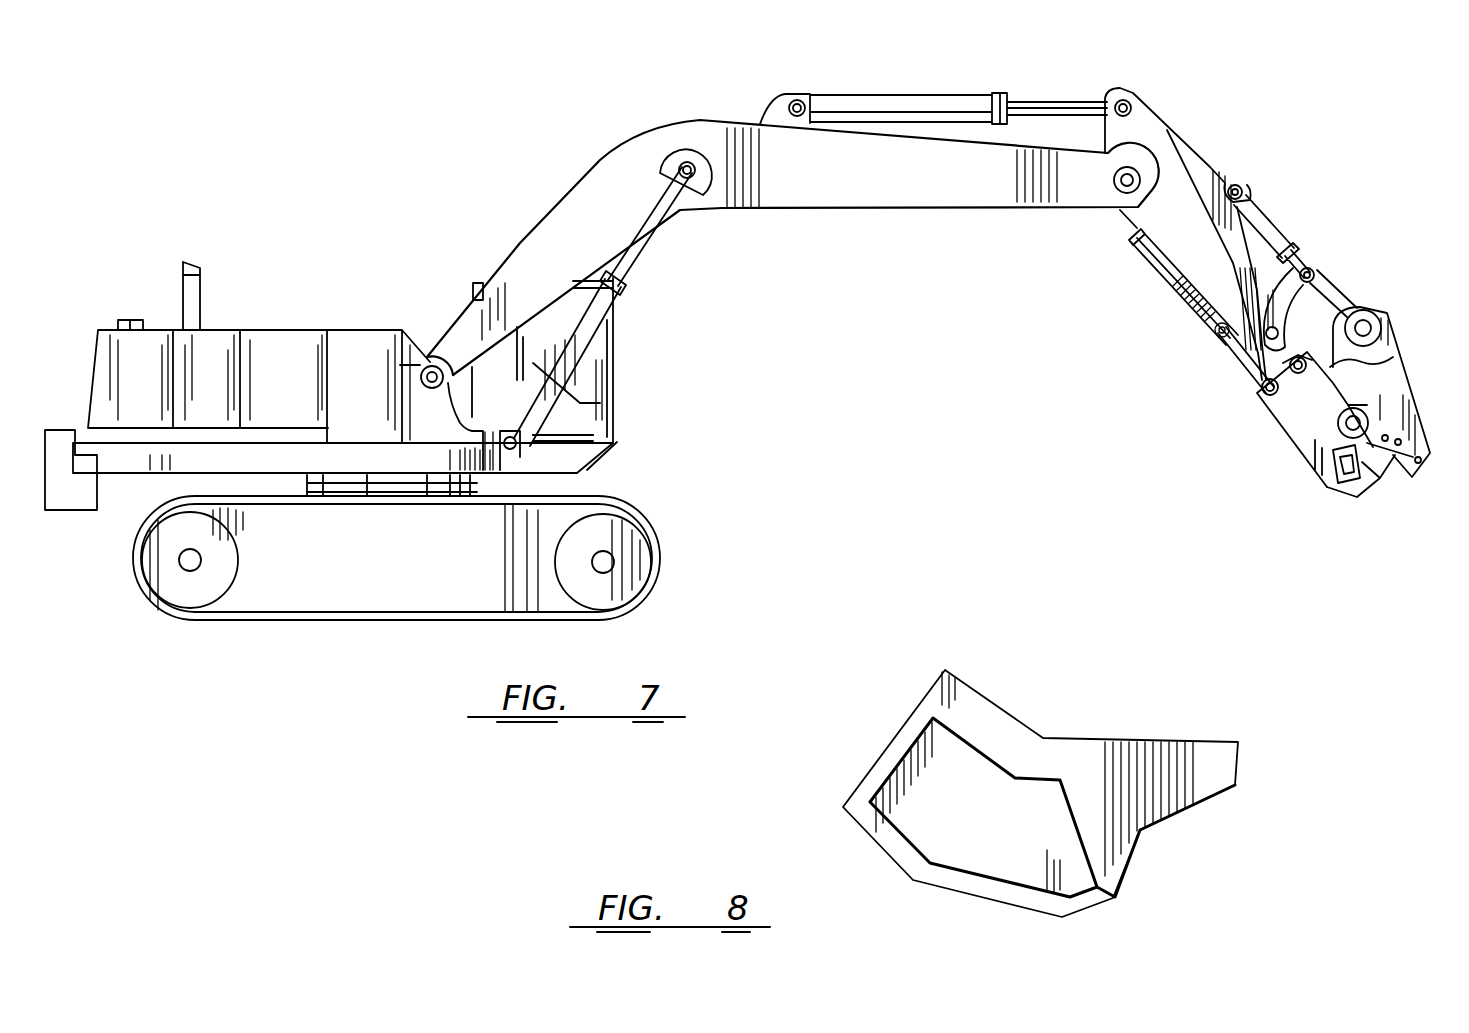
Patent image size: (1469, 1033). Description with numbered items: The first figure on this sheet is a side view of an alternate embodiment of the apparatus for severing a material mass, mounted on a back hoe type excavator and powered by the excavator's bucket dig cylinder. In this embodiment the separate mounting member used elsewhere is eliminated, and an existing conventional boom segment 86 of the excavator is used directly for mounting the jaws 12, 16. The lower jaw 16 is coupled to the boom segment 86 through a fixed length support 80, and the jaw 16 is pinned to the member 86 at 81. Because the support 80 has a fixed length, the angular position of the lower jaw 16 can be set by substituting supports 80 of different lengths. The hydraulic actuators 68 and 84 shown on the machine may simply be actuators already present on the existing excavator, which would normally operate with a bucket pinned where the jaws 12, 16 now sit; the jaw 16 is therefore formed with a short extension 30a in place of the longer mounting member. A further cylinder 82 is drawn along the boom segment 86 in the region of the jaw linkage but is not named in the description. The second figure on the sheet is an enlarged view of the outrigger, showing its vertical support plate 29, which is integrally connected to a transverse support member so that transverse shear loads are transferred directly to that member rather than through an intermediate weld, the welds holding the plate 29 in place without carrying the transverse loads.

In FIG. 7, the upper jaw 12 is at (1382, 402).
In FIG. 7, the lower jaw 16 is at (1337, 487).
In FIG. 8, the vertical support plate 29 is at (995, 735).
In FIG. 7, the short extension 30a is at (1310, 417).
In FIG. 7, the hydraulic actuator 68 is at (898, 105).
In FIG. 7, the fixed length support 80 is at (632, 388).
In FIG. 7, the pin connection 81 is at (1280, 410).
In FIG. 7, the bucket cylinder 82 is at (1197, 317).
In FIG. 7, the hydraulic actuator 84 is at (1268, 232).
In FIG. 7, the boom segment 86 is at (1167, 148).